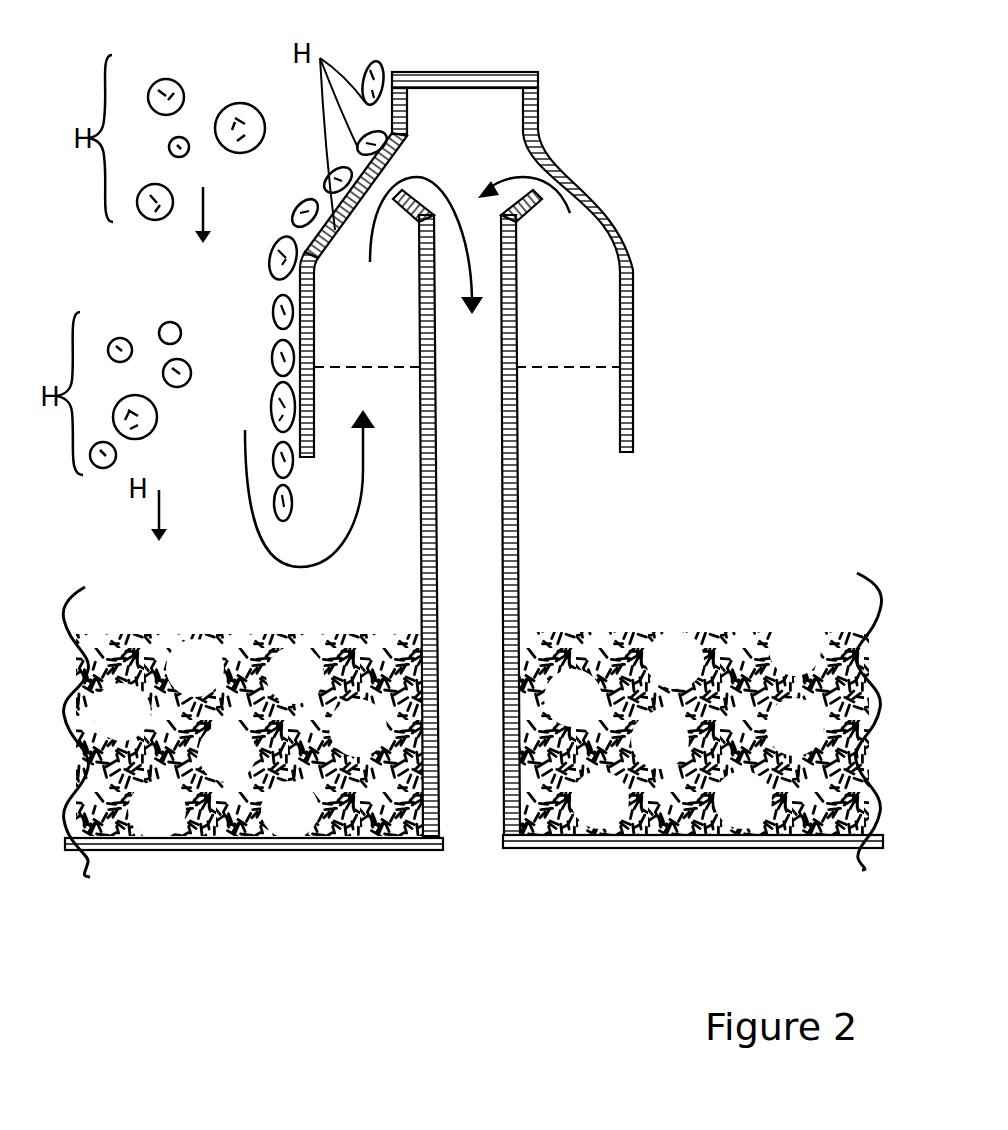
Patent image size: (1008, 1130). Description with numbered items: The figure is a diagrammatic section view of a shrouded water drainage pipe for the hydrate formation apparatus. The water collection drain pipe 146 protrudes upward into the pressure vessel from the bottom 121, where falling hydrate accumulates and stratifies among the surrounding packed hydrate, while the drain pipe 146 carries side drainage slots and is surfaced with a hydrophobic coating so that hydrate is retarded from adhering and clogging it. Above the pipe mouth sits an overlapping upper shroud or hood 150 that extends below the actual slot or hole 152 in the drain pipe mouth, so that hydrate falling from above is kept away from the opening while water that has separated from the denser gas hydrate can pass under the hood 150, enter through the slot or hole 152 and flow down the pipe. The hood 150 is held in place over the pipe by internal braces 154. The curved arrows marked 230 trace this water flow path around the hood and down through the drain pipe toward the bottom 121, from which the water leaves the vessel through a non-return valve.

The bottom 121 is at (208, 852).
The water collection drain pipe 146 is at (560, 612).
The upper shroud or hood 150 is at (638, 300).
The slot or hole 152 is at (482, 136).
The internal brace 154 is at (557, 370).
The water flow path 230 is at (391, 372).